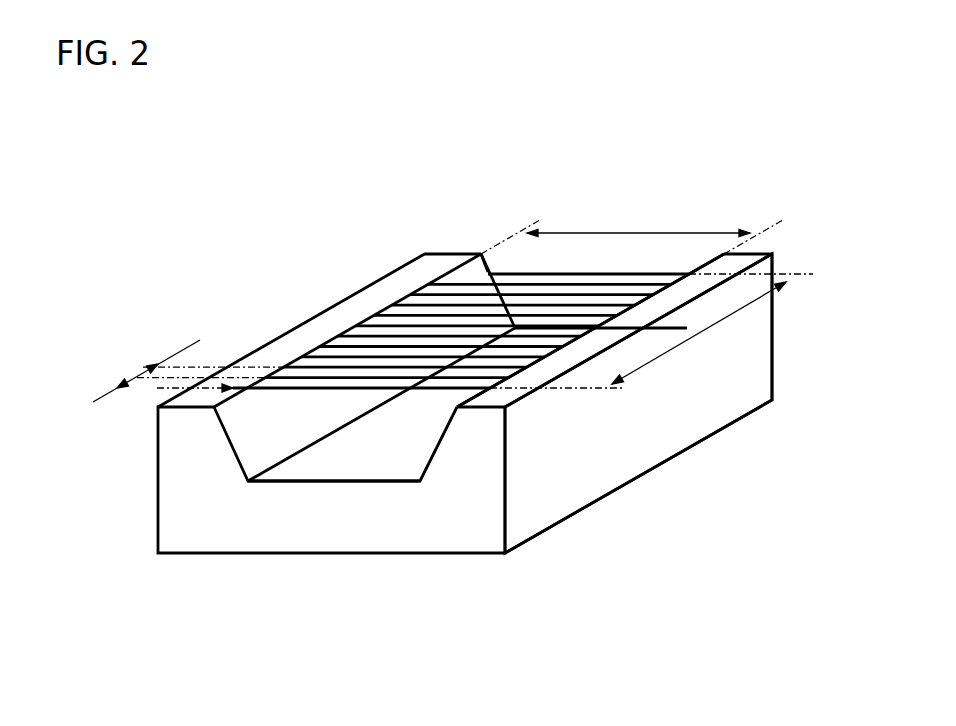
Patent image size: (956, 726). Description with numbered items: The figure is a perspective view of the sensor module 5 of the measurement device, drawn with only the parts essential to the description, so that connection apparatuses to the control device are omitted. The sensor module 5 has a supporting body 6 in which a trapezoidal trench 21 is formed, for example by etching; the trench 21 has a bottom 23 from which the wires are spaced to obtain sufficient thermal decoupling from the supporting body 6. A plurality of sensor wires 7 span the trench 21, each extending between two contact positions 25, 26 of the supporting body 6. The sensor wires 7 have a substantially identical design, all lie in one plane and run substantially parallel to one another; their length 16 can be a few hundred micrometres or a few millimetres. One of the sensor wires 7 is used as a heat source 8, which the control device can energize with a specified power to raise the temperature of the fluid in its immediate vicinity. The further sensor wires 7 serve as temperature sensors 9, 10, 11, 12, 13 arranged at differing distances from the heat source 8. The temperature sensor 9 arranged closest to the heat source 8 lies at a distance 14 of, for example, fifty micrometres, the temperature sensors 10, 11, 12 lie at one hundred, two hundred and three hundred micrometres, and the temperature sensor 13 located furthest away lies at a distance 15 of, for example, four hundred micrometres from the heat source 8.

The sensor module 5 is at (645, 505).
The supporting body 6 is at (703, 417).
The sensor wires 7 is at (597, 262).
The heat source 8 is at (277, 383).
The temperature sensor 9 is at (307, 360).
The temperature sensor 10 is at (345, 340).
The temperature sensor 11 is at (378, 322).
The temperature sensor 12 is at (414, 298).
The temperature sensor 13 is at (451, 280).
The distance 14 is at (148, 368).
The distance 15 is at (708, 328).
The length 16 is at (607, 233).
The trapezoidal trench 21 is at (330, 462).
The bottom 23 is at (385, 465).
The contact position 25 is at (505, 396).
The contact position 26 is at (157, 389).